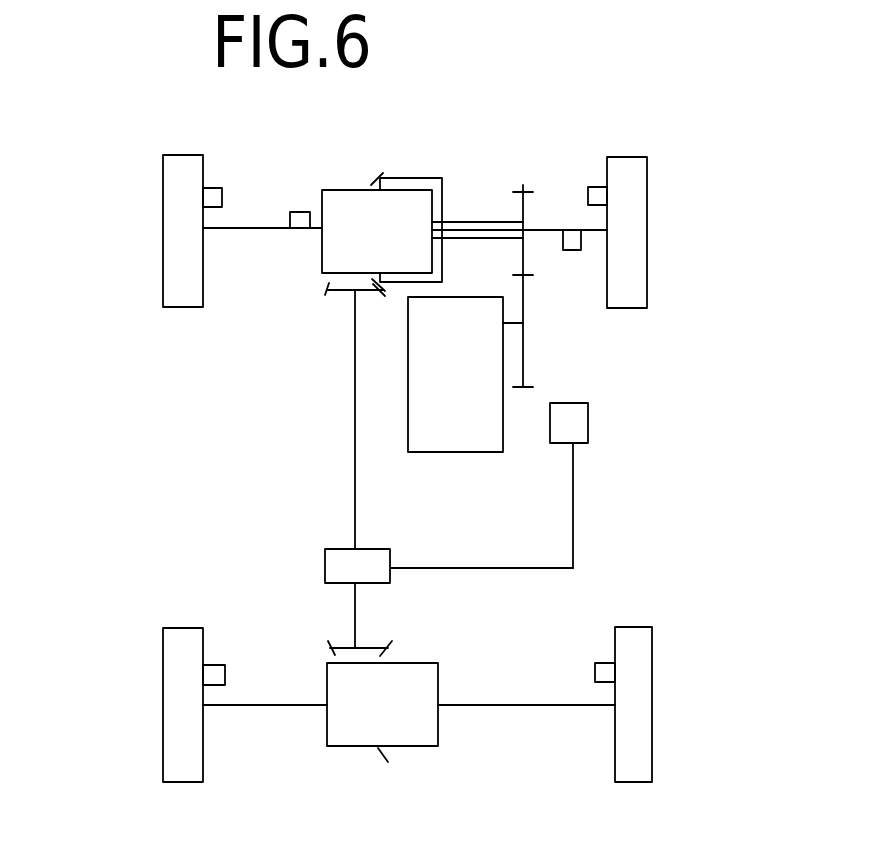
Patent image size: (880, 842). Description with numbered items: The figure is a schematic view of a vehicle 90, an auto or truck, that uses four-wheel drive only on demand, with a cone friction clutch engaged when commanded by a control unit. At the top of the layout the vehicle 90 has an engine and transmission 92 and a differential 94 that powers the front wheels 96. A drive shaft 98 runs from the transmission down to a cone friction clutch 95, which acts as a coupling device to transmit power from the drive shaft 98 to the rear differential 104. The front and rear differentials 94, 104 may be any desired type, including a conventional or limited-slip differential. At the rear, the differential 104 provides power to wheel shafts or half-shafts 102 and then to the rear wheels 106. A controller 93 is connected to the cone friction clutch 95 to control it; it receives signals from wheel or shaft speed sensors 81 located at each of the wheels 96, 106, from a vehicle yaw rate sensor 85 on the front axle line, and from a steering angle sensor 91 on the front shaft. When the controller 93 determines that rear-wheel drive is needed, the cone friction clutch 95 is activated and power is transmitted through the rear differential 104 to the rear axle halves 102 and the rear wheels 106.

The vehicle 90 is at (150, 484).
The differential 94 is at (352, 195).
The steering angle sensor 91 is at (300, 212).
The wheel or shaft speed sensors 81 is at (223, 197).
The front wheels 96 is at (171, 298).
The vehicle yaw rate sensor 85 is at (571, 250).
The drive shaft 98 is at (355, 390).
The engine and transmission 92 is at (497, 445).
The controller 93 is at (588, 422).
The cone friction clutch 95 is at (390, 560).
The rear differential 104 is at (412, 746).
The wheel shafts or half-shafts 102 is at (268, 705).
The rear wheels 106 is at (172, 778).